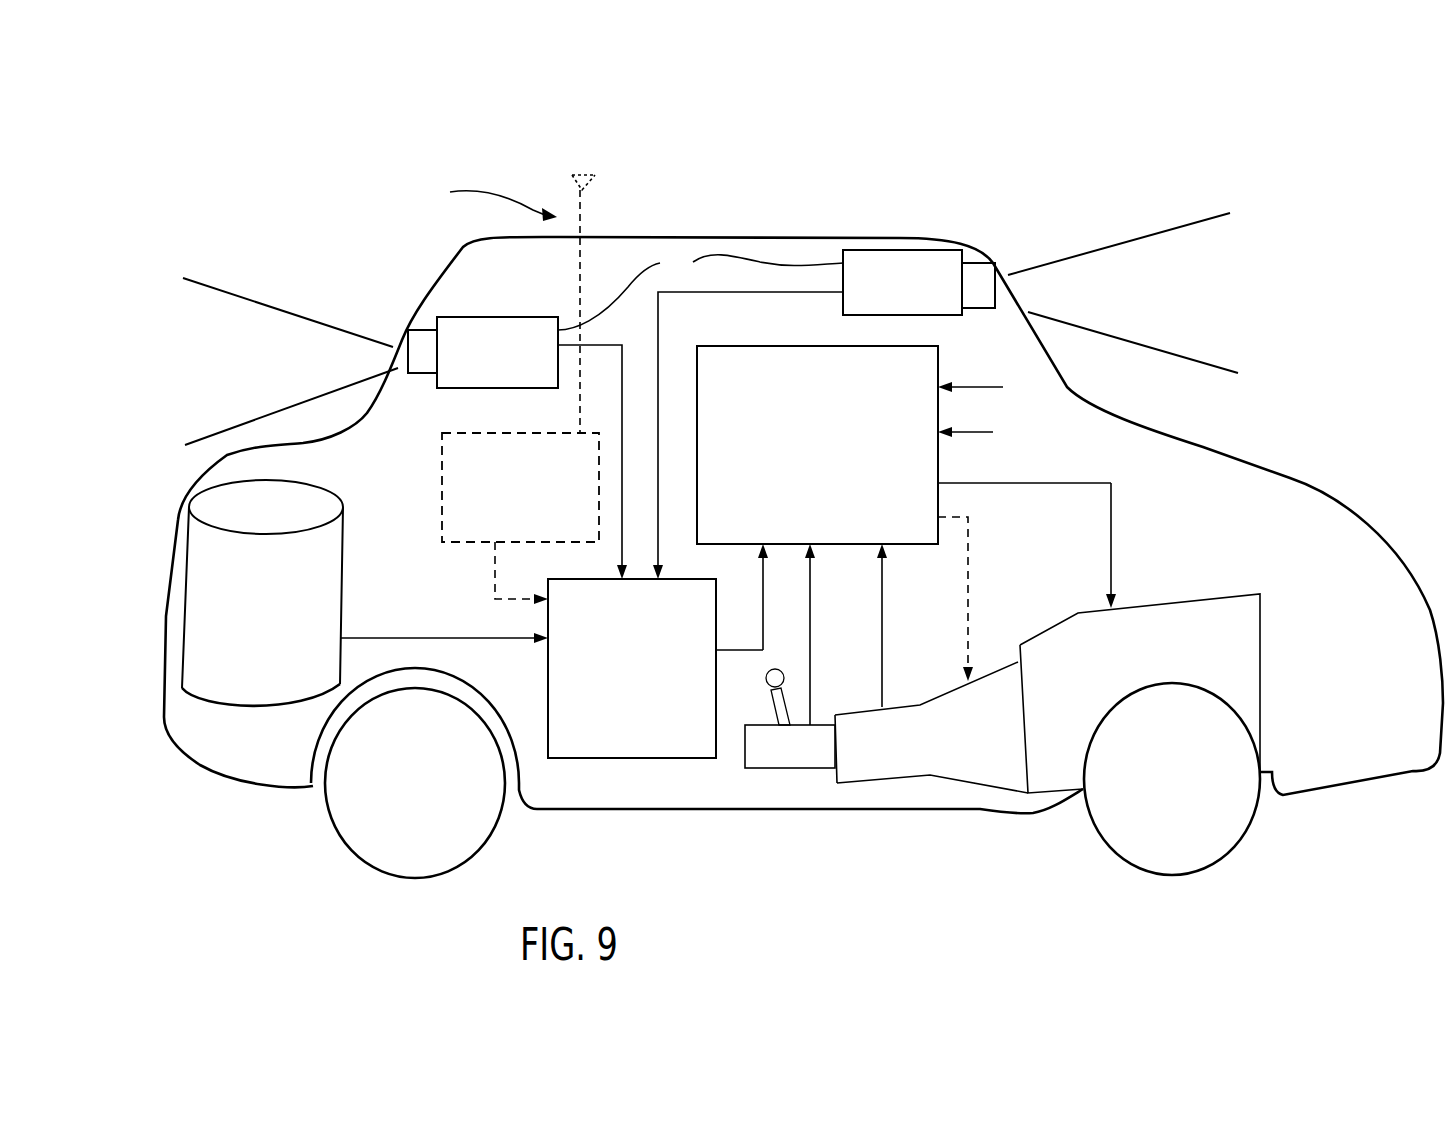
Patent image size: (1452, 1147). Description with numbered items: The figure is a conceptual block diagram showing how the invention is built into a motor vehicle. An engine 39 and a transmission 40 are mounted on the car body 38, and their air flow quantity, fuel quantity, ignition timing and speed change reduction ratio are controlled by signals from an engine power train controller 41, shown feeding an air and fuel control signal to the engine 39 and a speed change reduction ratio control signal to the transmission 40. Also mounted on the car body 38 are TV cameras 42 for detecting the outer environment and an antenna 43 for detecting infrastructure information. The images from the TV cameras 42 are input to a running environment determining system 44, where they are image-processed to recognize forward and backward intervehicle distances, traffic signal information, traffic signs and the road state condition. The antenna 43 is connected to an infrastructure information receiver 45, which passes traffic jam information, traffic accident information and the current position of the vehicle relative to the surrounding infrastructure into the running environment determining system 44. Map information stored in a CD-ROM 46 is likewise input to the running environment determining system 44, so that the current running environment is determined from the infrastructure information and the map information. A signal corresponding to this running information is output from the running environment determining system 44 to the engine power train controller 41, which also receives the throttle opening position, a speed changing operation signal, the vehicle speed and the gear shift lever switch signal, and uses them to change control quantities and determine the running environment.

The car body 38 is at (1292, 478).
The engine 39 is at (1071, 770).
The transmission 40 is at (987, 778).
The engine power train controller 41 is at (938, 357).
The TV cameras 42 is at (701, 414).
The antenna 43 is at (582, 218).
The running environment determining system 44 is at (625, 758).
The infrastructure information receiver 45 is at (442, 488).
The CD-ROM 46 is at (256, 699).